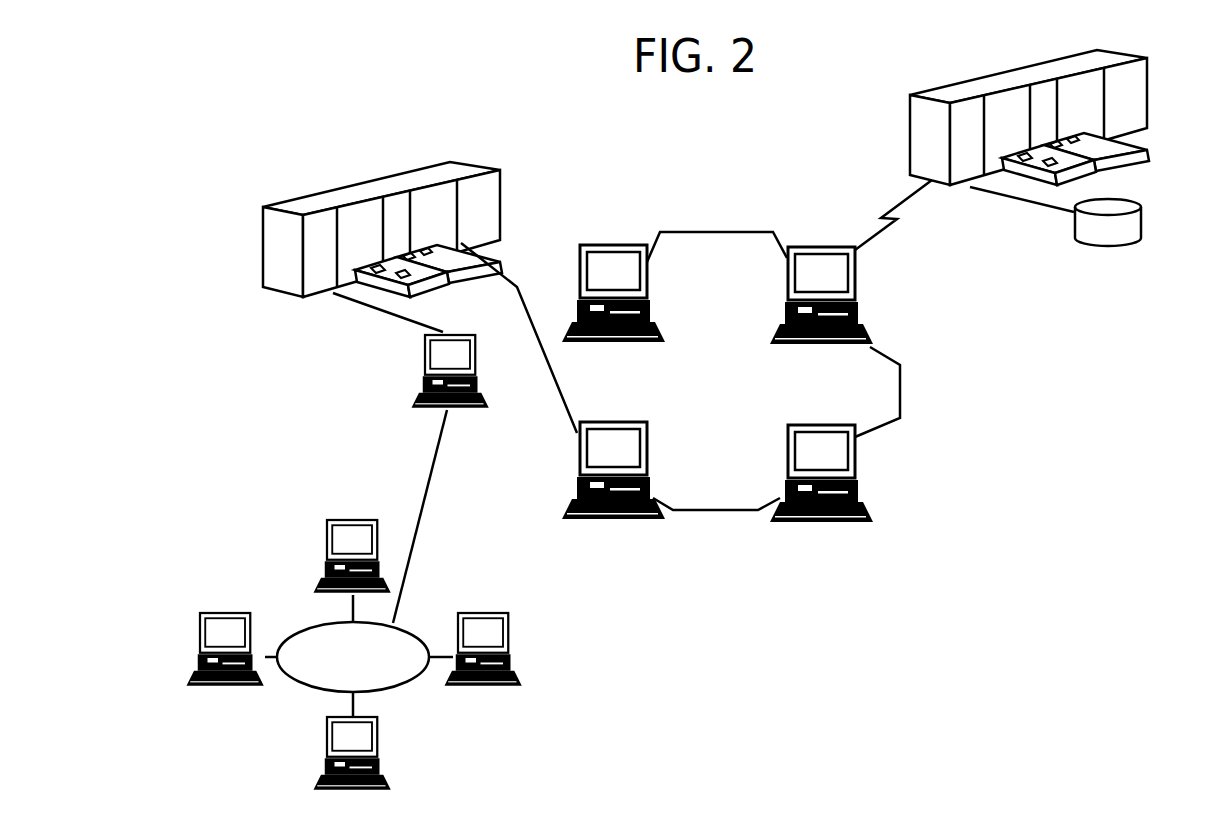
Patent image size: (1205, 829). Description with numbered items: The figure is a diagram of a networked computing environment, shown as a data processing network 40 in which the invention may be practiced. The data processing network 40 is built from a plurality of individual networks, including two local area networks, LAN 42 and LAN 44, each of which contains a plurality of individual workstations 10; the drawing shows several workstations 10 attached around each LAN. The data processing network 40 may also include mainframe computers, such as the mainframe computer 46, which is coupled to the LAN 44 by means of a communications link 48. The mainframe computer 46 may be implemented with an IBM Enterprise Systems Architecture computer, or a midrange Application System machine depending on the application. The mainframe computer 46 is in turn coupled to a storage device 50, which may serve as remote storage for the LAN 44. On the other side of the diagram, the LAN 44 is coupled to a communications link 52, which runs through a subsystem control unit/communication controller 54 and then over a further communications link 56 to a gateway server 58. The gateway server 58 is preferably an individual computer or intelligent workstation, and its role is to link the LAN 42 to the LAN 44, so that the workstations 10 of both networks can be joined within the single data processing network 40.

The workstation 10 is at (608, 242).
The data processing network 40 is at (724, 214).
The LAN 42 is at (359, 666).
The LAN 44 is at (773, 371).
The mainframe computer 46 is at (967, 80).
The communications link 48 is at (903, 194).
The storage device 50 is at (1143, 211).
The communications link 52 is at (523, 301).
The subsystem control unit/communication controller 54 is at (387, 175).
The communications link 56 is at (372, 307).
The gateway server 58 is at (480, 348).